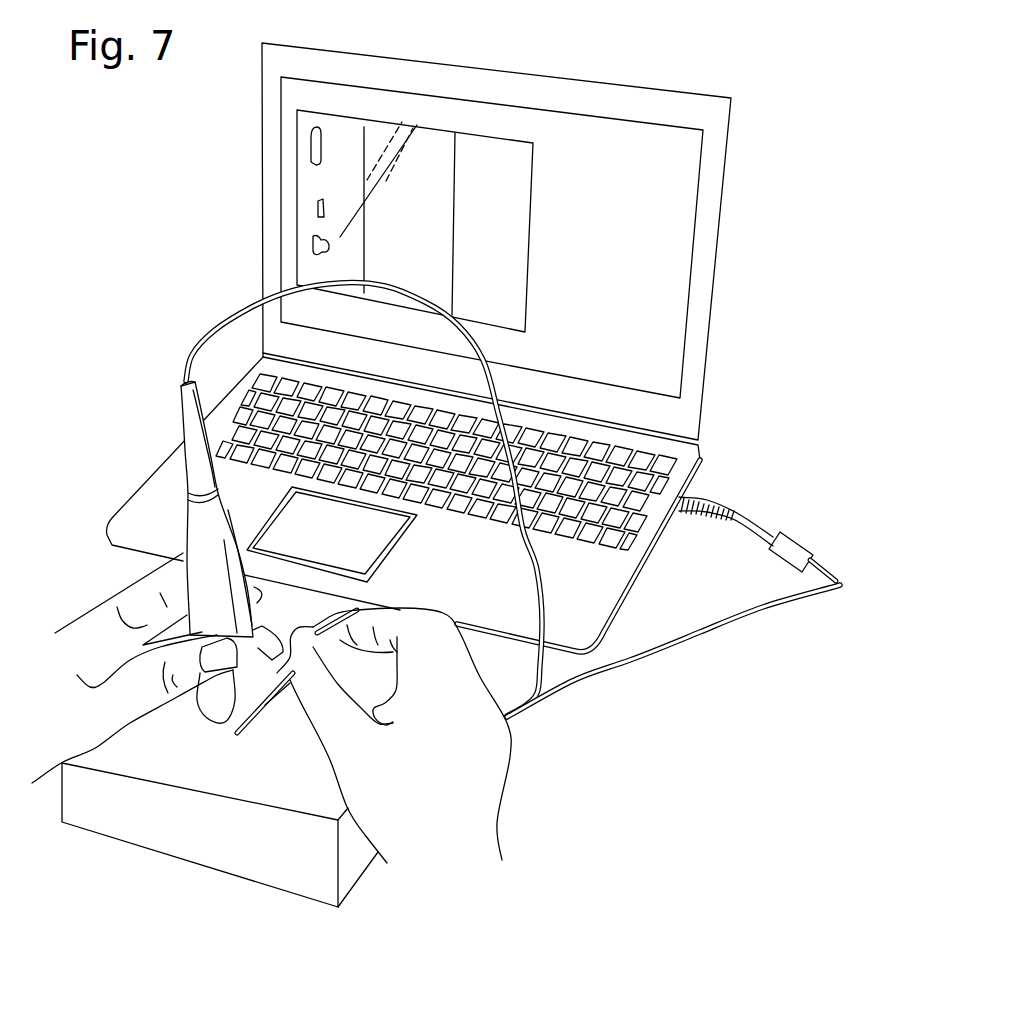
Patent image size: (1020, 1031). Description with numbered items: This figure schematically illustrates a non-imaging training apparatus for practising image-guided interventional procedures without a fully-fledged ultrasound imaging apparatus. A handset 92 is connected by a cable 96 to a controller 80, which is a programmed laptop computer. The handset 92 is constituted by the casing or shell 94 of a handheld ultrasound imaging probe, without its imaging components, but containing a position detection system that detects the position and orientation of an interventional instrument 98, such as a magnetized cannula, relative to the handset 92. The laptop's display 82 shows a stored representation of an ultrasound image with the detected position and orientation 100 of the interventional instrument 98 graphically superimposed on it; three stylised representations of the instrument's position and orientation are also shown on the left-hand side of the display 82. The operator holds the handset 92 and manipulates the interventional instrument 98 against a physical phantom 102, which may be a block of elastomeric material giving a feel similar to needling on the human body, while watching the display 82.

The controller 80 is at (160, 482).
The display 82 is at (653, 308).
The handset 92 is at (177, 535).
The casing or shell 94 is at (210, 533).
The cable 96 is at (223, 323).
The interventional instrument 98 is at (265, 712).
The detected position and orientation 100 is at (313, 185).
The physical phantom 102 is at (183, 813).